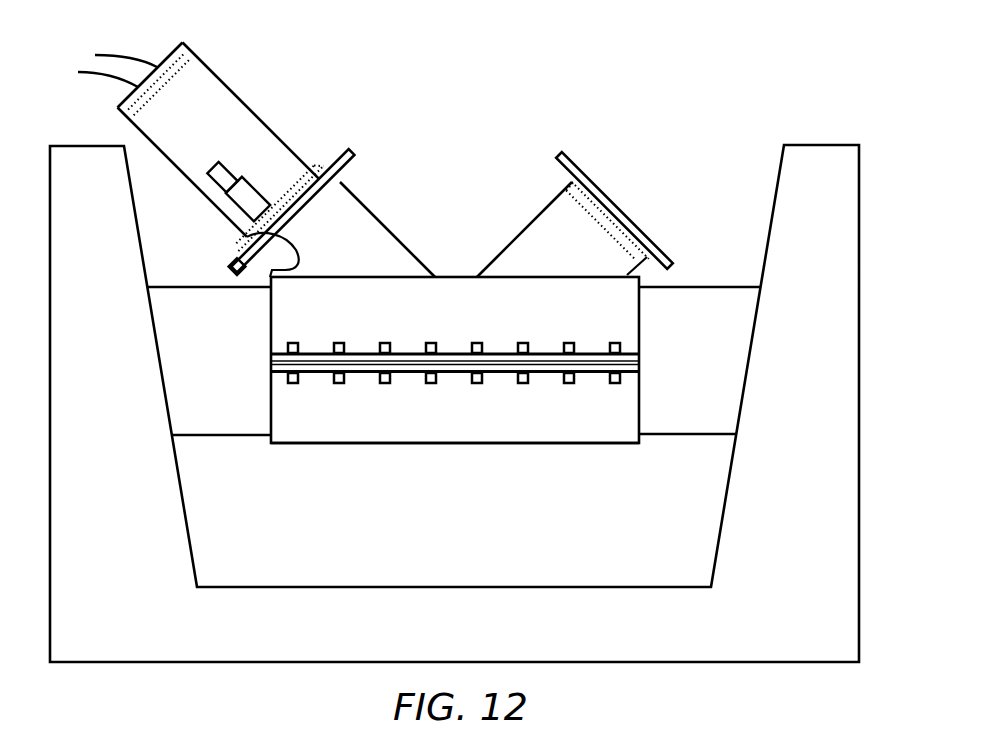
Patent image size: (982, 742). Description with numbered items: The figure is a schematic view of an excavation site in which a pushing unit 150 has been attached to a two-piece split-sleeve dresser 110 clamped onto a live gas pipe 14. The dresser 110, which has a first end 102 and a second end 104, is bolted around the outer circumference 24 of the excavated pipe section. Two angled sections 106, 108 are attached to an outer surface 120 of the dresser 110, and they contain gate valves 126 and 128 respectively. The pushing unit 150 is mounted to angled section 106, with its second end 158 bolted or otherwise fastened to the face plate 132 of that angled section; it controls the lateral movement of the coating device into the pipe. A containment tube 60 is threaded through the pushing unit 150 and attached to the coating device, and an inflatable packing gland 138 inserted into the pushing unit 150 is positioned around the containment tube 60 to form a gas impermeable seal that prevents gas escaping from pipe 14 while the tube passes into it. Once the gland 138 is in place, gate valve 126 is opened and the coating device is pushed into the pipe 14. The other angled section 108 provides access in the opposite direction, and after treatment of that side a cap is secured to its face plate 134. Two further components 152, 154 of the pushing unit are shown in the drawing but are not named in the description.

The live gas pipe 14 is at (699, 440).
The outer circumference 24 is at (651, 440).
The containment tube 60 is at (150, 60).
The first end 102 is at (268, 388).
The second end 104 is at (641, 402).
The angled section 106 is at (380, 219).
The angled section 108 is at (523, 218).
The two-piece split-sleeve dresser 110 is at (490, 445).
The outer surface 120 is at (413, 432).
The gate valve 126 is at (330, 202).
The gate valve 128 is at (577, 218).
The face plate 132 is at (328, 167).
The face plate 134 is at (620, 212).
The inflatable packing gland 138 is at (170, 88).
The pushing unit 150 is at (246, 105).
The connector 152 is at (213, 167).
The camera 154 is at (260, 195).
The second end 158 is at (235, 263).